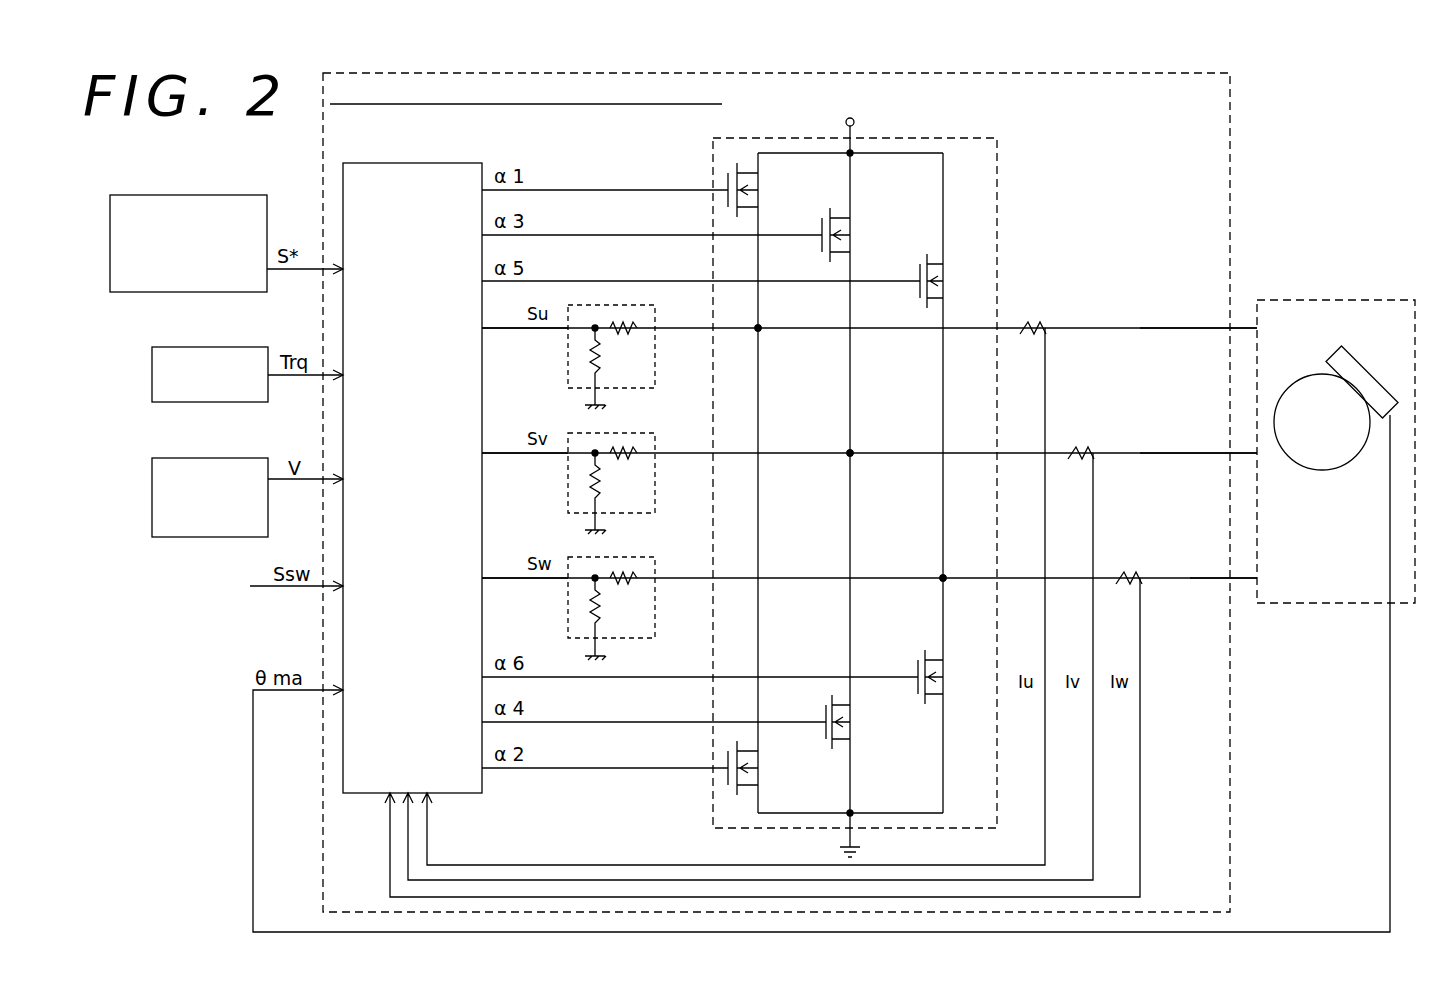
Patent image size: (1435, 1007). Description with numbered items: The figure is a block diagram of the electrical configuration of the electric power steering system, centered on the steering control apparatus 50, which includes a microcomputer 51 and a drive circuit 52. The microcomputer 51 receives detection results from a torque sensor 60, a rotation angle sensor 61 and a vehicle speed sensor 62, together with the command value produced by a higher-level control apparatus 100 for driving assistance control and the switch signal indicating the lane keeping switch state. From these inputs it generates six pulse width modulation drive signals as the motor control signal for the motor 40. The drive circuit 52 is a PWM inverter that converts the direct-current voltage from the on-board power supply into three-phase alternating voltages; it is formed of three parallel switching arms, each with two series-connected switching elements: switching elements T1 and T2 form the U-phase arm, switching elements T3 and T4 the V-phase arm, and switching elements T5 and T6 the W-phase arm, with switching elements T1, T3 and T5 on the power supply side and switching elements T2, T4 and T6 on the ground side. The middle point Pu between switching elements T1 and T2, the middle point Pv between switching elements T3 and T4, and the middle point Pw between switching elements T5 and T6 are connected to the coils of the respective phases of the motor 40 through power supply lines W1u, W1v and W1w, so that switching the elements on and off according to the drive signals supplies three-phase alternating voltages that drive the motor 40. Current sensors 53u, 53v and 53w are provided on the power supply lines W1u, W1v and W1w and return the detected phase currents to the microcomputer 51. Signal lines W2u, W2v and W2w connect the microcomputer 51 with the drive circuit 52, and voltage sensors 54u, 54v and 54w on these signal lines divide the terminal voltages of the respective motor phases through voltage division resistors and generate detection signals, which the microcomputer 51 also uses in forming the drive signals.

The steering control apparatus 50 is at (1230, 92).
The microcomputer 51 is at (410, 163).
The drive circuit 52 is at (862, 476).
The current sensor 53u is at (1030, 320).
The current sensor 53v is at (1078, 445).
The current sensor 53w is at (1126, 570).
The voltage sensor 54u is at (636, 363).
The voltage sensor 54v is at (636, 489).
The voltage sensor 54w is at (636, 614).
The higher-level control apparatus 100 is at (207, 194).
The torque sensor 60 is at (207, 347).
The vehicle speed sensor 62 is at (207, 458).
The motor 40 is at (1303, 378).
The rotation angle sensor 61 is at (1370, 376).
The switching element T1 is at (725, 190).
The switching element T2 is at (728, 768).
The switching element T3 is at (821, 235).
The switching element T4 is at (826, 722).
The switching element T5 is at (919, 280).
The switching element T6 is at (918, 677).
The middle point Pu is at (762, 324).
The middle point Pv is at (854, 449).
The middle point Pw is at (947, 574).
The power supply line W1u is at (1160, 330).
The power supply line W1v is at (1163, 455).
The power supply line W1w is at (1193, 580).
The signal line W2u is at (508, 340).
The signal line W2v is at (508, 465).
The signal line W2w is at (508, 590).